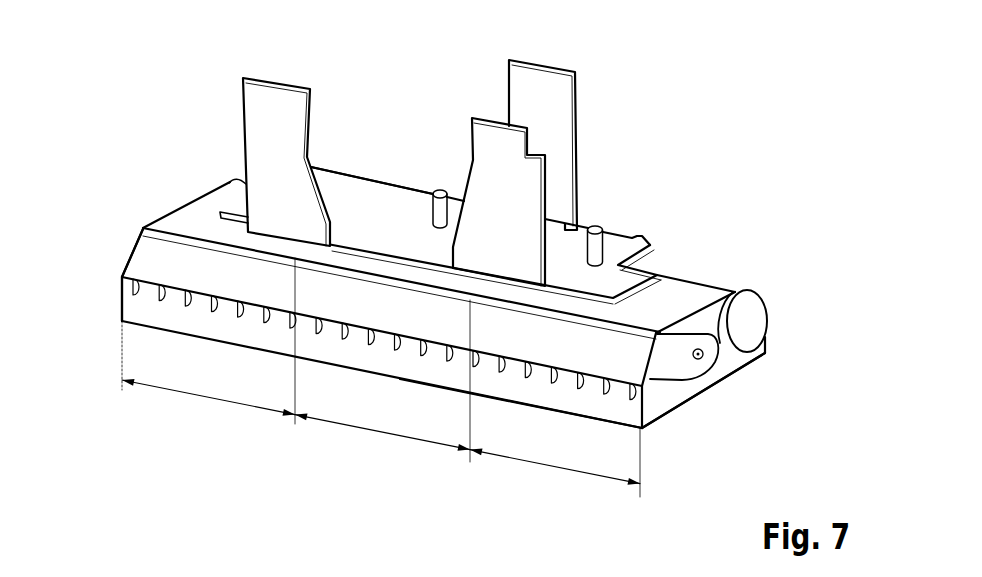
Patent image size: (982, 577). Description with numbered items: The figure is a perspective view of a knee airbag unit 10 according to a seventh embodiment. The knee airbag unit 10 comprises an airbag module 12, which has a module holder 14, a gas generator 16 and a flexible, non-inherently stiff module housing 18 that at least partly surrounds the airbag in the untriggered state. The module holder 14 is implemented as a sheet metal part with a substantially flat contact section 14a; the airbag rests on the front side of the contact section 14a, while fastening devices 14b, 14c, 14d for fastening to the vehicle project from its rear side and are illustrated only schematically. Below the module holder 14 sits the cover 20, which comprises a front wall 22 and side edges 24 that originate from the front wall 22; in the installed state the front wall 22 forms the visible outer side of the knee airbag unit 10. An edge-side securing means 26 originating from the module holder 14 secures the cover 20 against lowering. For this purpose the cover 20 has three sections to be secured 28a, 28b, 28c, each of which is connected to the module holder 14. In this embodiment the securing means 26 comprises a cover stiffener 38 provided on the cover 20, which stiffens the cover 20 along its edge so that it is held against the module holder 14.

The knee airbag unit 10 is at (644, 52).
The airbag module 12 is at (704, 152).
The module holder 14 is at (345, 167).
The contact section 14a is at (363, 197).
The fastening device 14b is at (273, 100).
The fastening device 14c is at (493, 135).
The fastening device 14d is at (540, 85).
The gas generator 16 is at (753, 322).
The module housing 18 is at (232, 195).
The cover 20 is at (340, 353).
The front wall 22 is at (441, 404).
The side edge 24 is at (503, 403).
The securing means 26 is at (97, 279).
The section to be secured 28a is at (170, 390).
The section to be secured 28b is at (367, 427).
The section to be secured 28c is at (560, 472).
The cover stiffener 38 is at (228, 343).